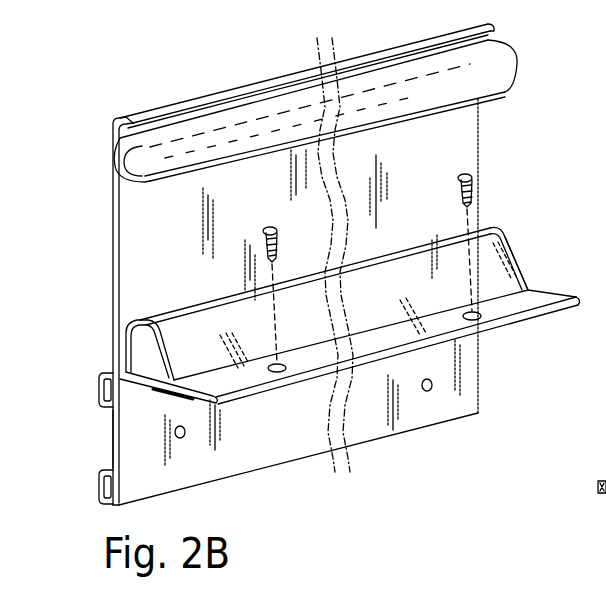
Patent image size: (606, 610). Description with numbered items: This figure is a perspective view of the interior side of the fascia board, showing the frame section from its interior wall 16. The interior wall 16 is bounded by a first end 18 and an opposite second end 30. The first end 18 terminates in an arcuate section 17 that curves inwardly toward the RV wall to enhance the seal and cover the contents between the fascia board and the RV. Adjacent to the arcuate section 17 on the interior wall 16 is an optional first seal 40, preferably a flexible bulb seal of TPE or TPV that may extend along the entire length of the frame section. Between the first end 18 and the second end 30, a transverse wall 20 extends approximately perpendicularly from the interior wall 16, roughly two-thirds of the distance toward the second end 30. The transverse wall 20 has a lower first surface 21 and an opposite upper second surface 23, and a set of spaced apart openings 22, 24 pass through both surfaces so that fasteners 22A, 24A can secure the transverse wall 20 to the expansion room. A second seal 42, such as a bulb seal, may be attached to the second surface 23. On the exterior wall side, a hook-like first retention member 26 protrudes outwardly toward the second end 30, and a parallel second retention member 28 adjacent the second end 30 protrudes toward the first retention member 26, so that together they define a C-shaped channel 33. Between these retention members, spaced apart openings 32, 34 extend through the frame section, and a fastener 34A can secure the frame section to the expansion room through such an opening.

The interior wall 16 is at (490, 158).
The arcuate section 17 is at (124, 116).
The first end 18 is at (185, 86).
The transverse wall 20 is at (556, 296).
The first surface 21 is at (517, 333).
The opening 22 is at (283, 362).
The fastener 22A is at (268, 227).
The second surface 23 is at (546, 285).
The opening 24 is at (483, 305).
The fastener 24A is at (461, 173).
The first retention member 26 is at (98, 397).
The second retention member 28 is at (97, 487).
The second end 30 is at (488, 423).
The opening 32 is at (434, 390).
The C-shaped channel 33 is at (88, 433).
The opening 34 is at (188, 440).
The fastener 34A is at (602, 478).
The first seal 40 is at (498, 62).
The second seal 42 is at (504, 232).